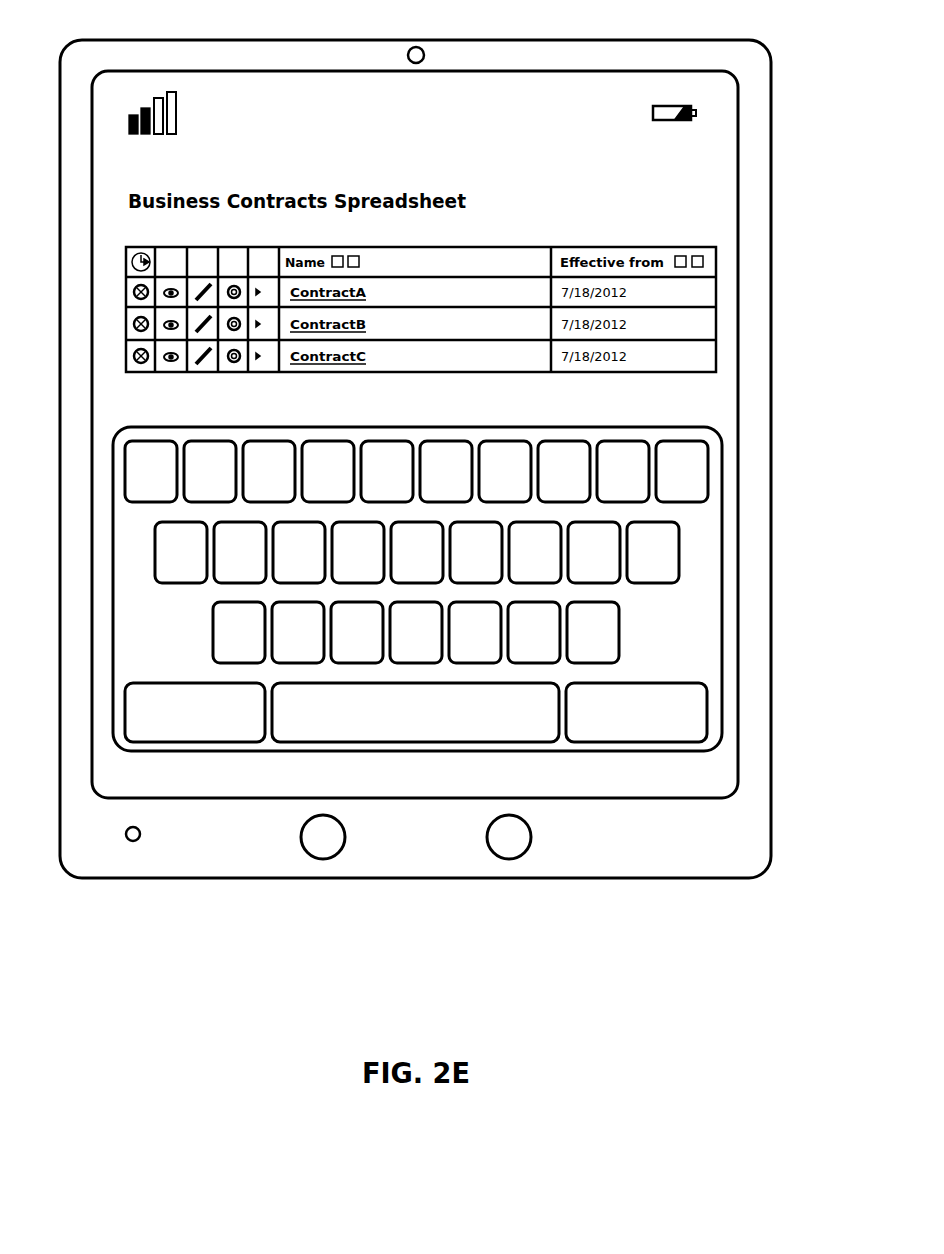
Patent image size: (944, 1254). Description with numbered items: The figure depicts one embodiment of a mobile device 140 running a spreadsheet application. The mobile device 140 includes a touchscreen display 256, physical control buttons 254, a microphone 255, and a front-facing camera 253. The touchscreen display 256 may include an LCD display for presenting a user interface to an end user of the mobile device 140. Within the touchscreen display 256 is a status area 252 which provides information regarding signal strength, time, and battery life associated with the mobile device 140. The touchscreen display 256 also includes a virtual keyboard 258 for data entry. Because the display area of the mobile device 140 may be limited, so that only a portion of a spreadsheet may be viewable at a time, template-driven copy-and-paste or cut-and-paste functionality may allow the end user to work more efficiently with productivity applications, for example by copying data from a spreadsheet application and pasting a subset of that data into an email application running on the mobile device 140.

The mobile device 140 is at (504, 954).
The status area 252 is at (780, 90).
The front-facing camera 253 is at (411, 47).
The physical control buttons 254 is at (780, 813).
The microphone 255 is at (146, 832).
The touchscreen display 256 is at (722, 780).
The virtual keyboard 258 is at (706, 440).